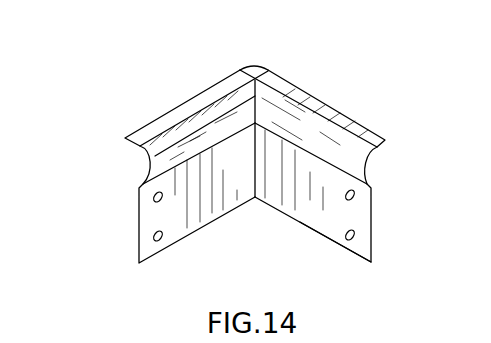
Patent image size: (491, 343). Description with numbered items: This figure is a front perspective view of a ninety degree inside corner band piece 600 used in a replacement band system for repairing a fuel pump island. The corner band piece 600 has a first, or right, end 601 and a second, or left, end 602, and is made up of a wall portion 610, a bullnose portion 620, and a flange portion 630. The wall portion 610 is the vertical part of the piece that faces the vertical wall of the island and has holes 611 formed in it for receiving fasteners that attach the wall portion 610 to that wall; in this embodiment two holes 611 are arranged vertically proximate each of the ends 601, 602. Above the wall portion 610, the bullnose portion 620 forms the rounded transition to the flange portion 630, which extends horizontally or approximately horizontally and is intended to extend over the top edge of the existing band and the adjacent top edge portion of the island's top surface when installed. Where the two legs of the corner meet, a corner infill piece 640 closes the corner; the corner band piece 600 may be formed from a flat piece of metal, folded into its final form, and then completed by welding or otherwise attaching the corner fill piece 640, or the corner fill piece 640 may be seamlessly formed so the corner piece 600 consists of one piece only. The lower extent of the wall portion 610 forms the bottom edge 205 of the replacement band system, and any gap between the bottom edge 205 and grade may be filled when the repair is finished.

The 90 degree inside corner band piece 600 is at (197, 212).
The wall portion 610 is at (320, 208).
The bullnose portion 620 is at (151, 166).
The flange portion 630 is at (290, 92).
The corner infill piece 640 is at (254, 72).
The first end 601 is at (383, 126).
The second end 602 is at (123, 135).
The holes 611 is at (150, 237).
The bottom edge 205 is at (357, 256).